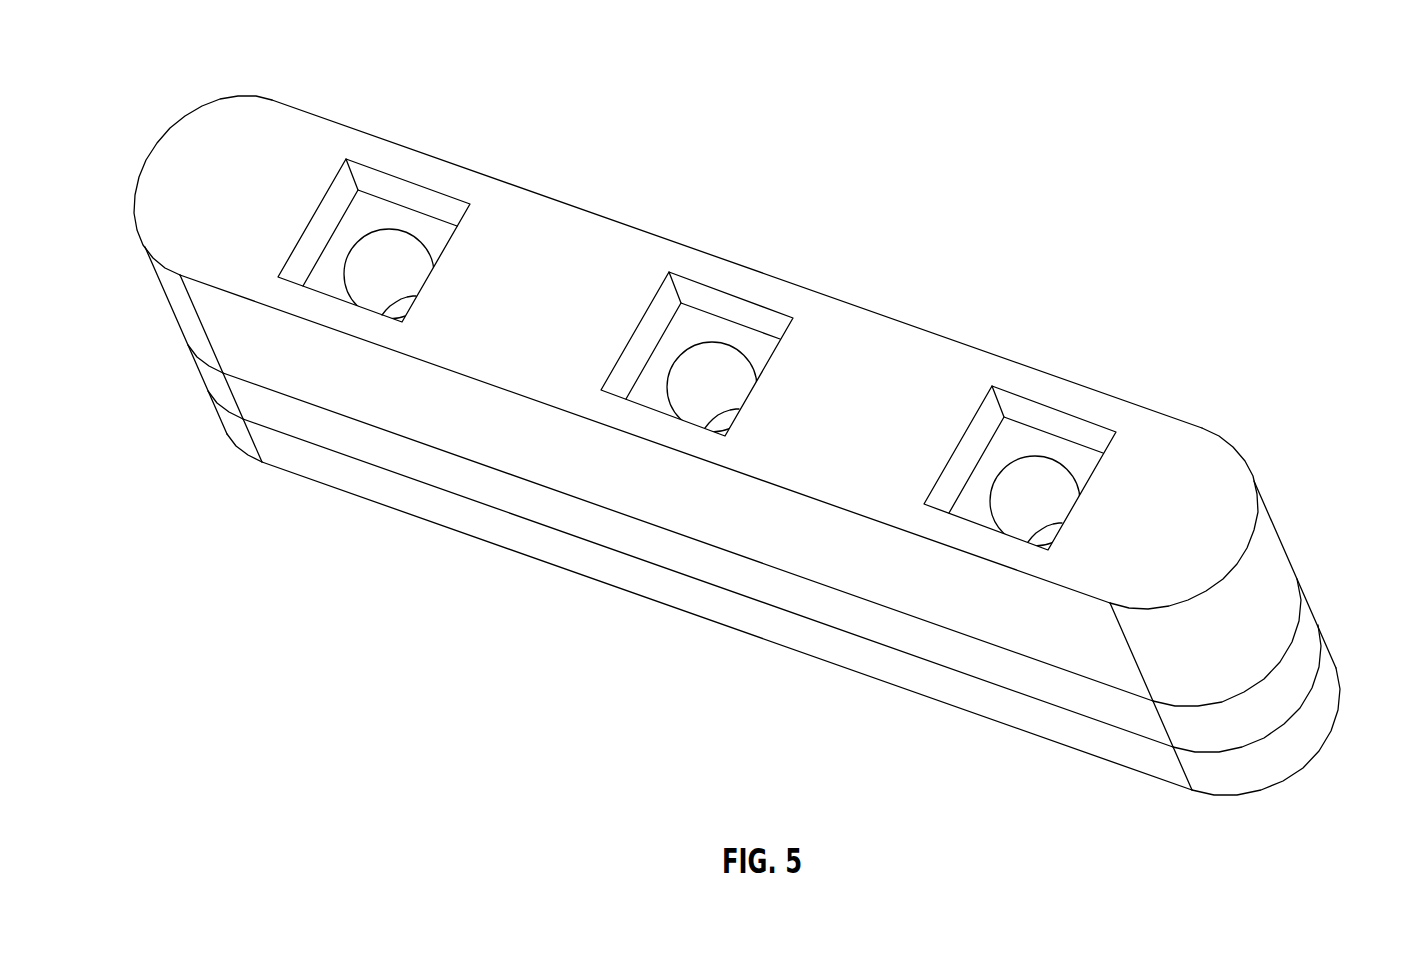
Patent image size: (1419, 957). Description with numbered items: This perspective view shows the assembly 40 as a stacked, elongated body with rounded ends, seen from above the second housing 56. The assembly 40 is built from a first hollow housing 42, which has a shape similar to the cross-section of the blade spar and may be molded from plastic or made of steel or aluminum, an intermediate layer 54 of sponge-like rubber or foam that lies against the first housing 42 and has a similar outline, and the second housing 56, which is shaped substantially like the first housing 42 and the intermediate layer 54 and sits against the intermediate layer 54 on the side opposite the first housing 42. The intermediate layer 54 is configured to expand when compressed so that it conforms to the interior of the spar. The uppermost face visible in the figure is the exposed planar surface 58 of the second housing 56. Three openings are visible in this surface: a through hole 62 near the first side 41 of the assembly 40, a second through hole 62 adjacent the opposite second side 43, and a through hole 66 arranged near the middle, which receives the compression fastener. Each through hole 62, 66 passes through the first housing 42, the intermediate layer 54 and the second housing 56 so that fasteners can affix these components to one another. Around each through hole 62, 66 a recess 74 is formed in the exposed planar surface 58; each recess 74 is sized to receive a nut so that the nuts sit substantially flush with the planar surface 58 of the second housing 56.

The assembly 40 is at (1140, 100).
The first side 41 is at (185, 343).
The first hollow housing 42 is at (1317, 758).
The second side 43 is at (1323, 683).
The intermediate layer 54 is at (1317, 613).
The second housing 56 is at (1263, 572).
The exposed planar surface 58 is at (1208, 453).
The through hole 62 is at (403, 253).
The through hole 66 is at (725, 367).
The recess 74 is at (357, 186).